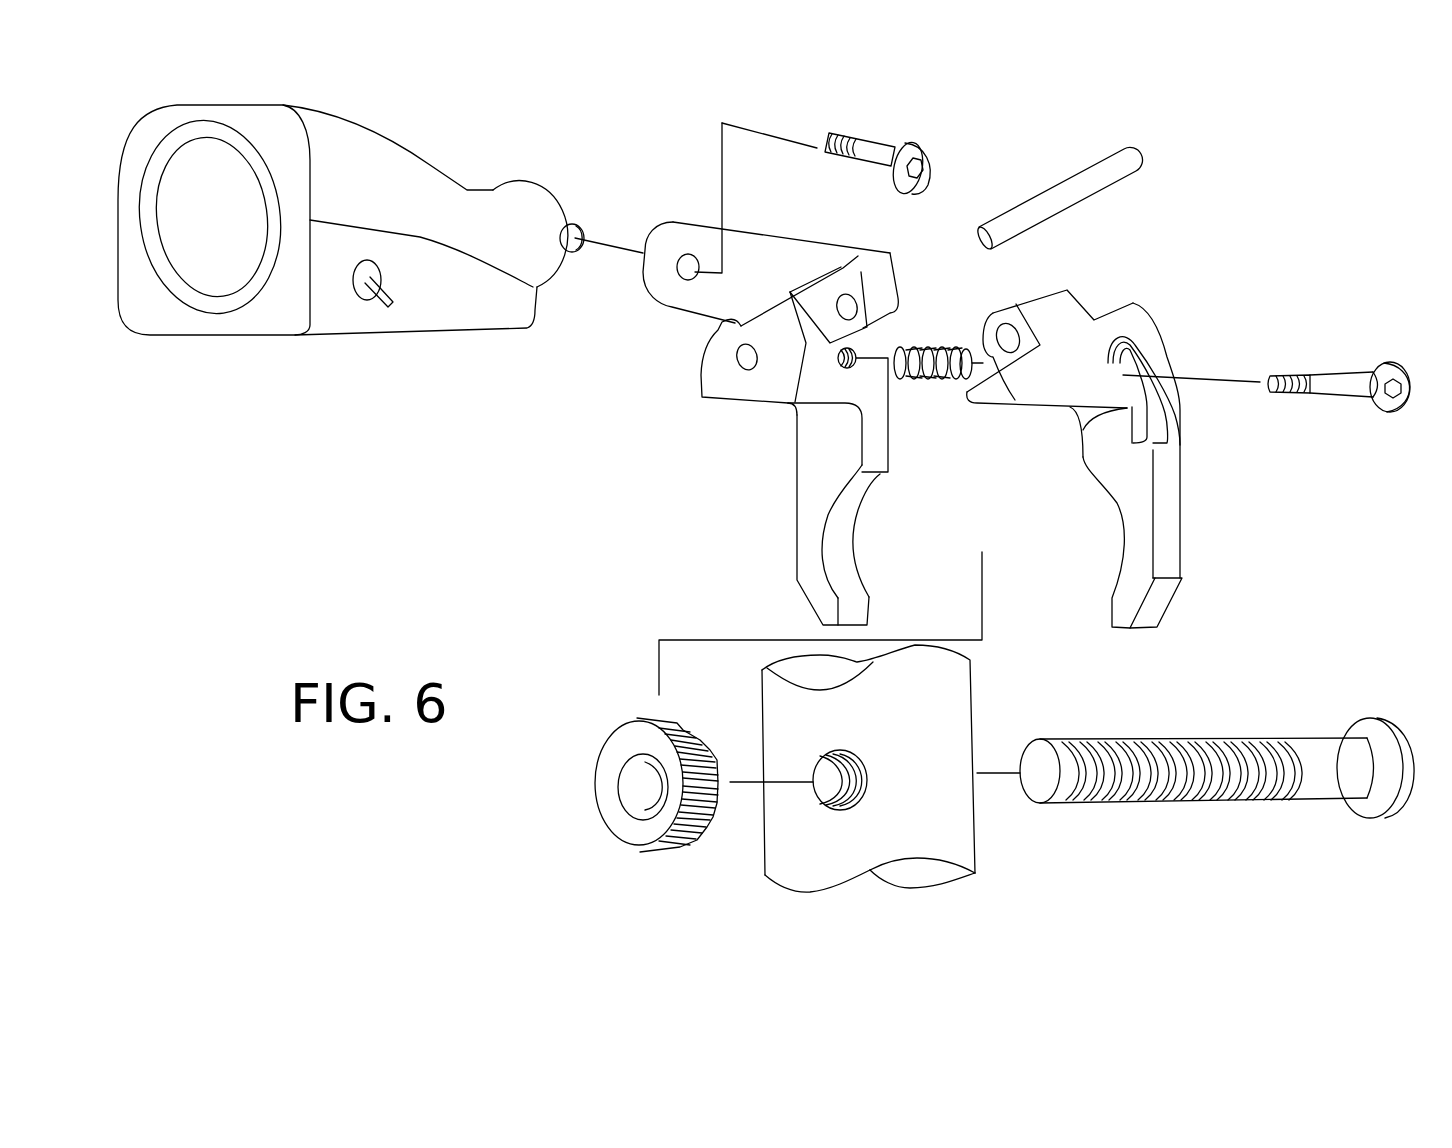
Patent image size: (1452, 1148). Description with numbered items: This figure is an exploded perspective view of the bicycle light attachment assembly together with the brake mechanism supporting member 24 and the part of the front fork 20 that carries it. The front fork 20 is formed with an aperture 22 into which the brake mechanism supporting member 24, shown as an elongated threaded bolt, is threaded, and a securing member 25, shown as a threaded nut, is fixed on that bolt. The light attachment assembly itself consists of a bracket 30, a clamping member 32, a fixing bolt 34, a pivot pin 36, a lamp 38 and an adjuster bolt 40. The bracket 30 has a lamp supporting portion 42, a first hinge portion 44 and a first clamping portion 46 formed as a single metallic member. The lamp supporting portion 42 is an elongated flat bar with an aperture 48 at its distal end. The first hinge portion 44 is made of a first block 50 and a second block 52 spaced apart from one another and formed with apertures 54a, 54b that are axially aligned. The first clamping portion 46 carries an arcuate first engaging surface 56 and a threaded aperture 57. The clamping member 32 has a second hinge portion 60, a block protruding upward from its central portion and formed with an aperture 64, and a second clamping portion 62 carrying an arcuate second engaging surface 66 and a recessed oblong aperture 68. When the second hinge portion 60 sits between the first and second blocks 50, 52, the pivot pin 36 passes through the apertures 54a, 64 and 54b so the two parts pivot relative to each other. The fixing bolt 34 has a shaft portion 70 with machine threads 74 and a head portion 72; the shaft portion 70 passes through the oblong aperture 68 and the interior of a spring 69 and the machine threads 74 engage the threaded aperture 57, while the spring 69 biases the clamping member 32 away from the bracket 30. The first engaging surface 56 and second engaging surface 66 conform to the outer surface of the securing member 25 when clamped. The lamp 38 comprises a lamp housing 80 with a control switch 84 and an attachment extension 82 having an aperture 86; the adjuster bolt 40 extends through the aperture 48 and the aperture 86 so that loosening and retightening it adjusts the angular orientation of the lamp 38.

The front fork 20 is at (957, 720).
The aperture 22 is at (827, 797).
The brake mechanism supporting member 24 is at (1315, 750).
The securing member 25 is at (625, 748).
The bracket 30 is at (627, 362).
The clamping member 32 is at (1170, 230).
The fixing bolt 34 is at (1433, 305).
The pivot pin 36 is at (1065, 193).
The lamp 38 is at (337, 123).
The adjuster bolt 40 is at (883, 160).
The lamp supporting portion 42 is at (695, 293).
The first hinge portion 44 is at (712, 383).
The first clamping portion 46 is at (807, 460).
The aperture 48 is at (688, 262).
The first block 50 is at (777, 363).
The second block 52 is at (887, 290).
The aperture 54a is at (743, 352).
The aperture 54b is at (847, 305).
The first engaging surface 56 is at (833, 547).
The threaded aperture 57 is at (853, 370).
The second hinge portion 60 is at (1073, 323).
The second clamping portion 62 is at (1180, 463).
The aperture 64 is at (1010, 338).
The second engaging surface 66 is at (1118, 515).
The oblong aperture 68 is at (1127, 383).
The spring 69 is at (943, 385).
The shaft portion 70 is at (1333, 382).
The head portion 72 is at (1393, 368).
The machine threads 74 is at (1300, 372).
The lamp housing 80 is at (345, 323).
The attachment extension 82 is at (547, 197).
The control switch 84 is at (390, 307).
The aperture 86 is at (567, 253).